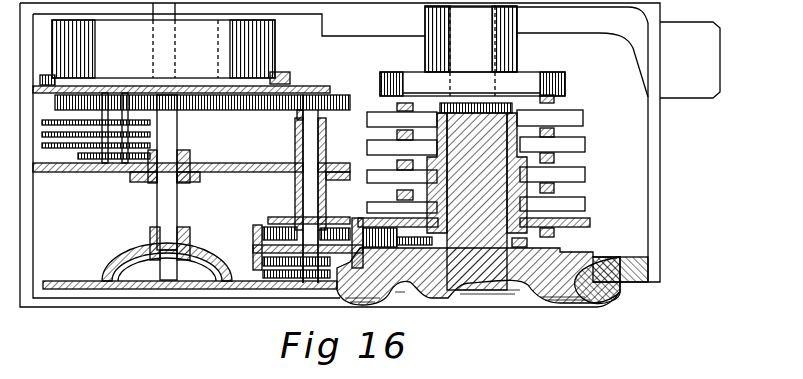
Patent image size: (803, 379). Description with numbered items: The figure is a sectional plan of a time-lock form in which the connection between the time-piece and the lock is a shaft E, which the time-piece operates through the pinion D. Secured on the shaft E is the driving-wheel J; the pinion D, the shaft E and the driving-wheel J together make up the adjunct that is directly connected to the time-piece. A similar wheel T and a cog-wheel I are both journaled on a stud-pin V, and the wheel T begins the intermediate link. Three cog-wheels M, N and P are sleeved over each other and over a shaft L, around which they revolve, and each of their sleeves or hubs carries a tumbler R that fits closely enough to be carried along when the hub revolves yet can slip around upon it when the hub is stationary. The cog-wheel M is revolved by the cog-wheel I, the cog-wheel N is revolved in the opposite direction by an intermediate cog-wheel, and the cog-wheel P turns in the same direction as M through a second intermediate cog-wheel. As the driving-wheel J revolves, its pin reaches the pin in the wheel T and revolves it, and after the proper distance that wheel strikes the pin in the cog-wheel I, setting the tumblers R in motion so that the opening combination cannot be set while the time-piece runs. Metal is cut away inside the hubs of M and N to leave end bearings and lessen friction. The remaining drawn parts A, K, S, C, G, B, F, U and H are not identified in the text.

The cylinder A'' A is at (163, 40).
The drum K'' K is at (471, 39).
The plate S'' S is at (330, 89).
The gear C'' C is at (179, 110).
The pinion D is at (322, 112).
The rack gears G''' G is at (73, 156).
The shaft B'' B is at (165, 187).
The plate F is at (191, 175).
The shaft E is at (310, 196).
The driving-wheel J is at (303, 204).
The wheel T is at (268, 226).
The cog-wheel I is at (253, 234).
The stud-pin V is at (308, 250).
The gear U'' U is at (256, 258).
The arch support H'' H is at (104, 270).
The shaft L is at (476, 196).
The tumbler R is at (551, 161).
The cog-wheel M is at (565, 221).
The cog-wheel N is at (554, 233).
The cog-wheel P is at (526, 243).